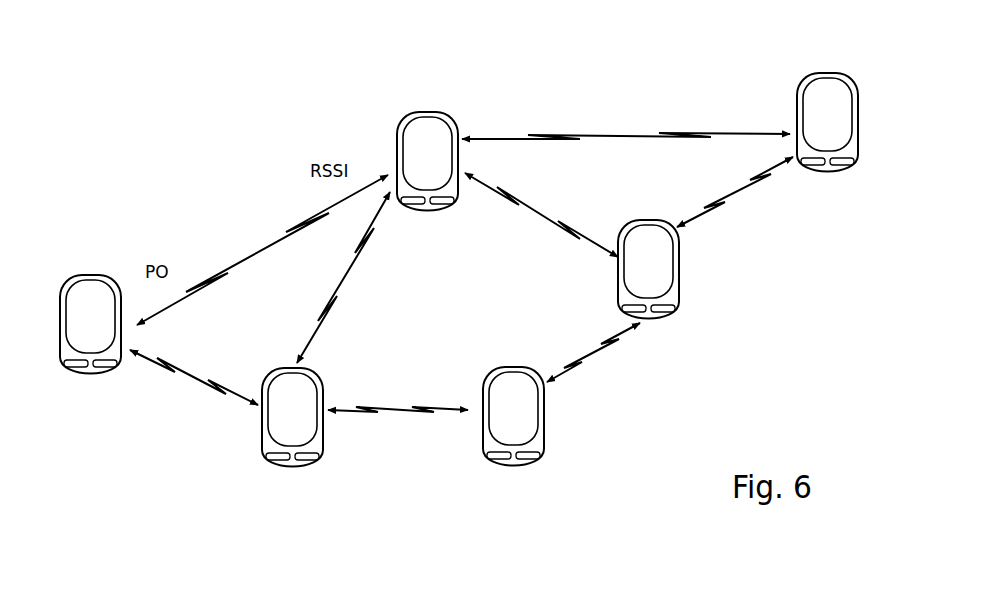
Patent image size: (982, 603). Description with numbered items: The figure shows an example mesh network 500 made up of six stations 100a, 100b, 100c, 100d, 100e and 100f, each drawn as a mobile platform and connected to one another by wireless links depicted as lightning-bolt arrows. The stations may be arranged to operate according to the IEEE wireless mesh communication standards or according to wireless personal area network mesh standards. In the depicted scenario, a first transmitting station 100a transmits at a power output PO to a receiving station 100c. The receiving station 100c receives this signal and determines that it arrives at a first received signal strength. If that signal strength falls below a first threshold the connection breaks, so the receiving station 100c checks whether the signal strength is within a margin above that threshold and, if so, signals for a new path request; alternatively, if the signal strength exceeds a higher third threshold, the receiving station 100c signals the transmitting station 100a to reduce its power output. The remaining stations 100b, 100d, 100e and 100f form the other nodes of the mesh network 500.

The mesh network 500 is at (232, 232).
The first transmitting station 100a is at (108, 216).
The station 100b is at (770, 36).
The receiving station 100c is at (358, 67).
The station 100d is at (300, 477).
The station 100e is at (517, 467).
The station 100f is at (680, 268).